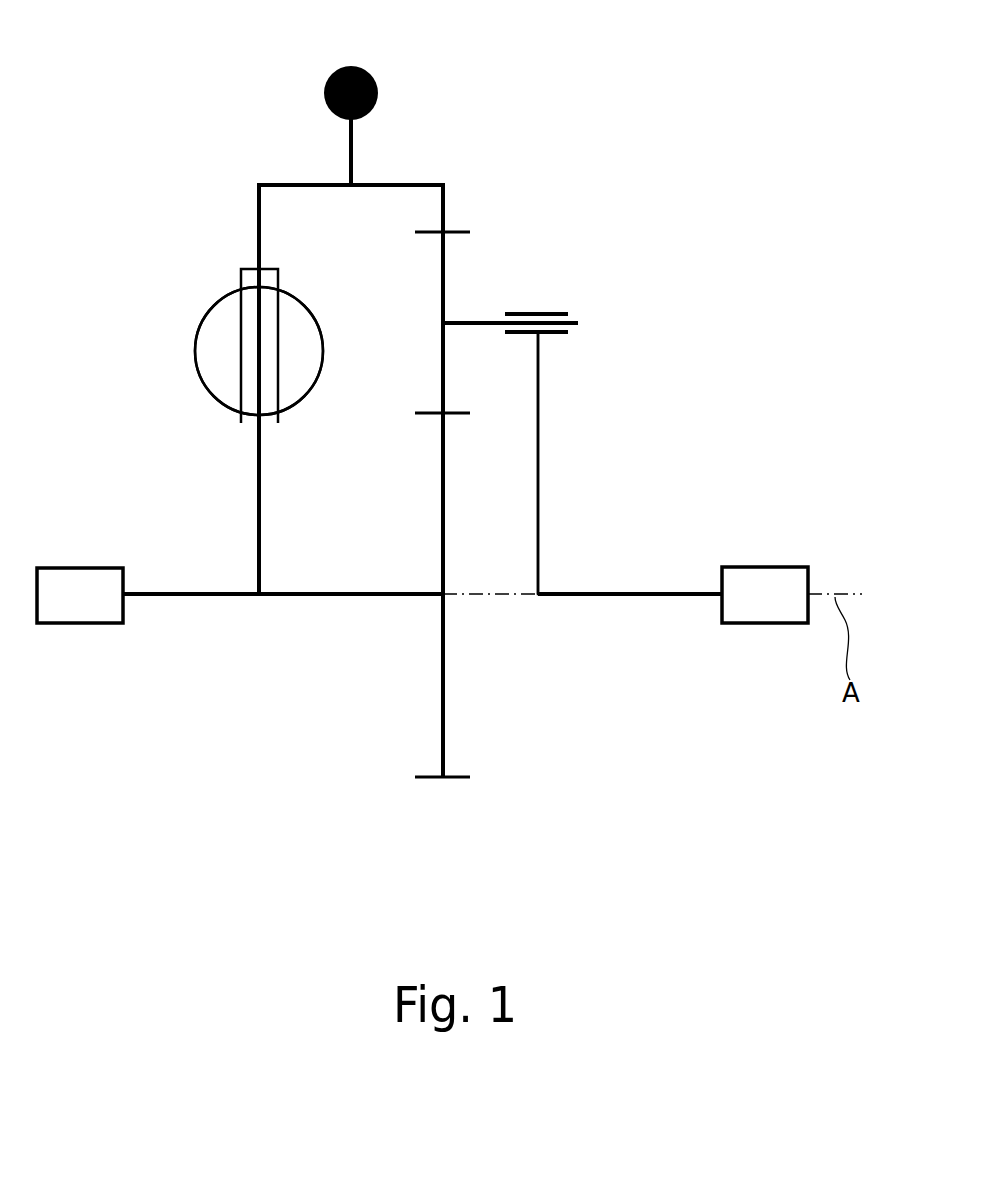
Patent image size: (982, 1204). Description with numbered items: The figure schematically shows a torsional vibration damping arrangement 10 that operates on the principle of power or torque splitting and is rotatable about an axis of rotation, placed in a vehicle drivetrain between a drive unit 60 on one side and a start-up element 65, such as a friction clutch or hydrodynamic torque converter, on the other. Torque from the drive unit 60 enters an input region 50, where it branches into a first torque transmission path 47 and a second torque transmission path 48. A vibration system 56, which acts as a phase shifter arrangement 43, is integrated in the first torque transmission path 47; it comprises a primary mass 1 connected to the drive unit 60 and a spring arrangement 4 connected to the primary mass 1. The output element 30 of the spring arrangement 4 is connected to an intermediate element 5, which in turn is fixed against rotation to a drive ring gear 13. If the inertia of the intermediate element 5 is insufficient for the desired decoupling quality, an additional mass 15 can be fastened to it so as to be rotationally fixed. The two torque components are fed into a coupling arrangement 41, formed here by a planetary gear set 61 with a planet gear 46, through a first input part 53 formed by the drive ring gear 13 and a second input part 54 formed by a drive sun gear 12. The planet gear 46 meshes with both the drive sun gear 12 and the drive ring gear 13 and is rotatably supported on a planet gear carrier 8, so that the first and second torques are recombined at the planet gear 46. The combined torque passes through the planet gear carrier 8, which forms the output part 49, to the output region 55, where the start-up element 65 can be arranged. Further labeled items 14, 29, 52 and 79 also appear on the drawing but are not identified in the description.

The primary mass 1 is at (259, 537).
The spring arrangement 4 is at (200, 325).
The intermediate element 5 is at (305, 185).
The planet gear carrier 8 is at (538, 413).
The torsional vibration damping arrangement 10 is at (477, 98).
The drive sun gear 12 is at (441, 738).
The drive ring gear 13 is at (443, 193).
The housing side wall 14 is at (441, 185).
The additional mass 15 is at (372, 72).
The wall section 29 is at (259, 452).
The output element 30 is at (258, 222).
The coupling arrangement 41 is at (525, 277).
The phase shifter arrangement 43 is at (220, 273).
The planet gear 46 is at (443, 258).
The first torque transmission path 47 is at (259, 503).
The second torque transmission path 48 is at (330, 596).
The output part 49 is at (538, 480).
The input region 50 is at (182, 602).
The shaft section 52 is at (464, 359).
The first input part 53 is at (446, 217).
The second input part 54 is at (440, 480).
The output region 55 is at (611, 605).
The vibration system 56 is at (166, 353).
The drive unit 60 is at (80, 595).
The planetary gear set 61 is at (554, 294).
The start-up element 65 is at (765, 595).
The shaft lower section 79 is at (479, 684).